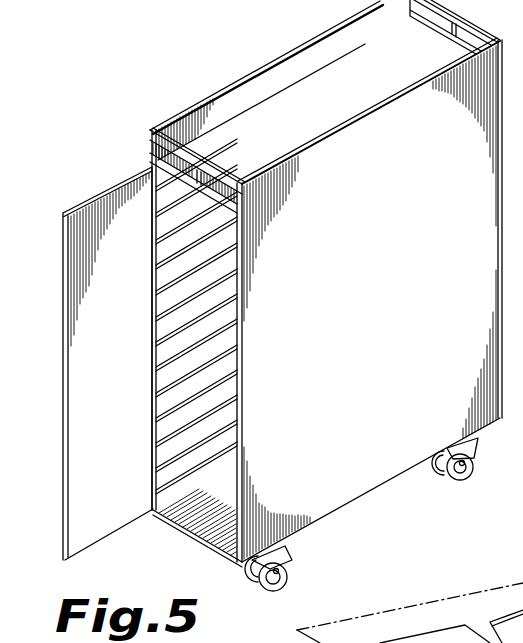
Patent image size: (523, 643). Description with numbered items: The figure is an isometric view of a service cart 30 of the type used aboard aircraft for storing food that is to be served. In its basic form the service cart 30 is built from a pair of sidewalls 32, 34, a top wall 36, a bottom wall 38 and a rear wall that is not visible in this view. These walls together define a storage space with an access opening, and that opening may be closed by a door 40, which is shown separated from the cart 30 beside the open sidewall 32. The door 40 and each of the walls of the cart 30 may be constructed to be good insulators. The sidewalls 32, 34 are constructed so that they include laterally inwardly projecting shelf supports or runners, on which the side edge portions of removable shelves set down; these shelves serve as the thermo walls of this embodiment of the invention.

The service cart 30 is at (142, 135).
The sidewall 32 is at (167, 348).
The sidewall 34 is at (321, 351).
The top wall 36 is at (333, 110).
The bottom wall 38 is at (197, 518).
The door 40 is at (99, 204).